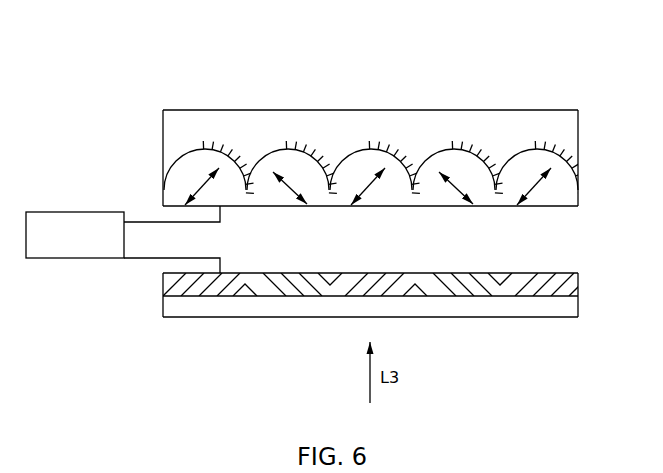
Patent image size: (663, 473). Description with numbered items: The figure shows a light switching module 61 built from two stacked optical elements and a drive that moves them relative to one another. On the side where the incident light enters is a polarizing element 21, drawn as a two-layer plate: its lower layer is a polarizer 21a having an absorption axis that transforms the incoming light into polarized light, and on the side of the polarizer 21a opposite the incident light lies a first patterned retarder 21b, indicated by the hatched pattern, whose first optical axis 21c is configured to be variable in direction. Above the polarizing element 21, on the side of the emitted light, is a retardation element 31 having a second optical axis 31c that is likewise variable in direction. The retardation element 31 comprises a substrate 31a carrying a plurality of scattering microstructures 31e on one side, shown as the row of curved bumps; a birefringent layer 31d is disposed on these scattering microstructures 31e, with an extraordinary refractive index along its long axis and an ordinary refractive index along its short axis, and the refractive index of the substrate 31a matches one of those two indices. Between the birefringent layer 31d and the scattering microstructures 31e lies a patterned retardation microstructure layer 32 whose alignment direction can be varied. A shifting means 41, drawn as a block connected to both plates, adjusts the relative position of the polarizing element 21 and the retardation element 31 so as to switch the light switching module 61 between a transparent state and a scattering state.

The light switching module 61 is at (88, 73).
The retardation element 31 is at (158, 110).
The substrate 31a is at (565, 131).
The second optical axis 31c is at (297, 183).
The birefringent layer 31d is at (565, 200).
The scattering microstructures 31e is at (482, 151).
The patterned retardation microstructure layer 32 is at (378, 151).
The shifting means 41 is at (62, 258).
The polarizing element 21 is at (158, 273).
The polarizer 21a is at (566, 312).
The first patterned retarder 21b is at (566, 290).
The first optical axis 21c is at (527, 282).